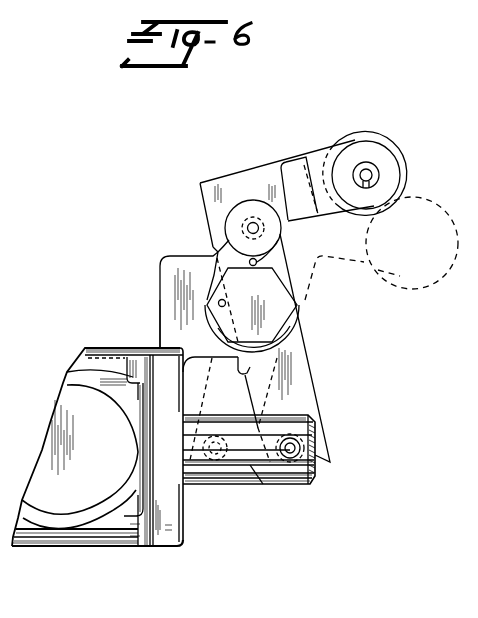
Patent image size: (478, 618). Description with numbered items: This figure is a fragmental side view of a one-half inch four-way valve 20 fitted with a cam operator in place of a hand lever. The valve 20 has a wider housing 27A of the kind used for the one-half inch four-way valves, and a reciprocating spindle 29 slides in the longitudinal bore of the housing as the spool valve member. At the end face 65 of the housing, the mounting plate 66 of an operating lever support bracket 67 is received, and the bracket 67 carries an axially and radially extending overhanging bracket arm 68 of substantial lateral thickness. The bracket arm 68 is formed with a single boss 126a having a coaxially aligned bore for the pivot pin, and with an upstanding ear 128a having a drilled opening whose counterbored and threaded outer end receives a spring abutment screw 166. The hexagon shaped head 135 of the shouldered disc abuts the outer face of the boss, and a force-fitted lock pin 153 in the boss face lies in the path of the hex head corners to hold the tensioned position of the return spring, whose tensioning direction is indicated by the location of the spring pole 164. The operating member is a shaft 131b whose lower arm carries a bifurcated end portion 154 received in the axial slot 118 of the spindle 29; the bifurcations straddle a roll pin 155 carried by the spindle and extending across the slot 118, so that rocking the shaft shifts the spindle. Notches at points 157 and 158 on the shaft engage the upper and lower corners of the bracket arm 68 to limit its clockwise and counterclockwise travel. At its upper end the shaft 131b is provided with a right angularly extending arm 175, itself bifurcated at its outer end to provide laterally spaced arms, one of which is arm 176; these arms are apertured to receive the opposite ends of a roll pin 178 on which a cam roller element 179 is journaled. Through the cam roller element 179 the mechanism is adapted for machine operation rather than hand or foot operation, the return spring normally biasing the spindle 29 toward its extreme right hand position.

The valve 20 is at (94, 559).
The valve housing 27A is at (111, 337).
The reciprocating spindle 29 is at (240, 487).
The body end face 65 is at (162, 503).
The mounting plate 66 is at (160, 550).
The operating lever support bracket 67 is at (146, 300).
The bracket arm 68 is at (167, 263).
The axial slot 118 is at (265, 481).
The boss 126a is at (294, 276).
The upstanding ear 128a is at (238, 212).
The operating shaft 131b is at (304, 339).
The hexagon shaped head 135 is at (298, 304).
The lock pin 153 is at (284, 226).
The bifurcated end portion 154 is at (328, 448).
The roll pin 155 is at (295, 440).
The lever notch point 157 is at (218, 370).
The lever notch point 158 is at (217, 252).
The spring pole 164 is at (226, 303).
The spring abutment screw 166 is at (253, 222).
The right angularly extending arm 175 is at (292, 166).
The laterally spaced arm 176 is at (341, 158).
The roll pin 178 is at (369, 170).
The cam roller element 179 is at (405, 158).